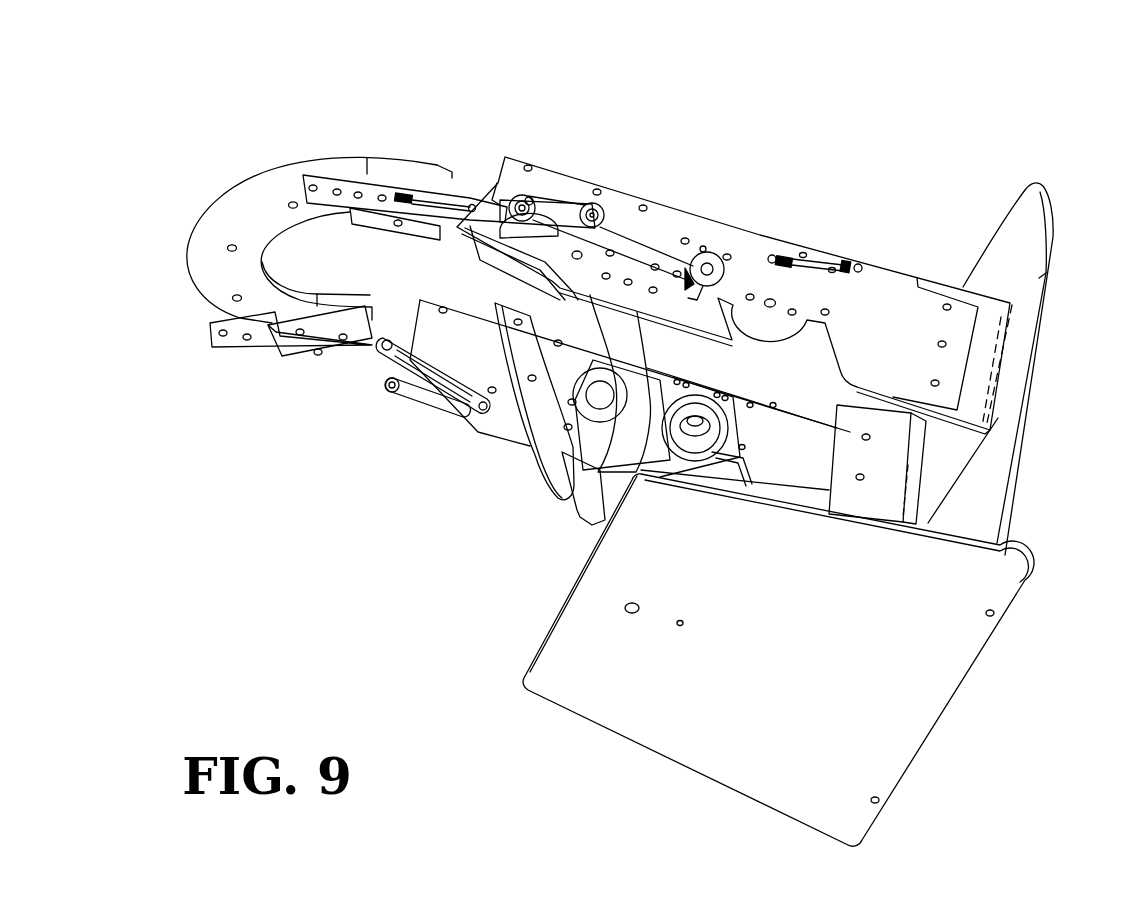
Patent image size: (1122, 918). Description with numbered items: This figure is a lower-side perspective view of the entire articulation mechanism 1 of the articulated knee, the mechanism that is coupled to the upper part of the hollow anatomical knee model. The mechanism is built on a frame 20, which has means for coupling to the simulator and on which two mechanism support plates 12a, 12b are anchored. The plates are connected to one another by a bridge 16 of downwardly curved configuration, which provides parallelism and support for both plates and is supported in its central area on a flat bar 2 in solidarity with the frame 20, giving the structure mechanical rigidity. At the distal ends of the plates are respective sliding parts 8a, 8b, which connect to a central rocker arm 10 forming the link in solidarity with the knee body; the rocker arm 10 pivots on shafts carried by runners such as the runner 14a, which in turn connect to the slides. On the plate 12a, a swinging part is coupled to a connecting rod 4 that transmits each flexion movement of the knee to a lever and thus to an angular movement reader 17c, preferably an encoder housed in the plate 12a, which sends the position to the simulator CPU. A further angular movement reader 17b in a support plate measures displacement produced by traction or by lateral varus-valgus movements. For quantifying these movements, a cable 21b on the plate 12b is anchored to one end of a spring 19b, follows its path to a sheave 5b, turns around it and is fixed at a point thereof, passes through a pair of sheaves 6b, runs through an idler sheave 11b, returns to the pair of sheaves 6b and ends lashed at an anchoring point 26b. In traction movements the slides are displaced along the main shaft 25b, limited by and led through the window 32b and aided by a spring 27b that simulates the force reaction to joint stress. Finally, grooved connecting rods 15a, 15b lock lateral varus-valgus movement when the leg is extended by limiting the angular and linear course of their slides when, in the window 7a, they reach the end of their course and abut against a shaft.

The articulation mechanism 1 is at (583, 746).
The flat bar 2 is at (573, 448).
The connecting rod 4 is at (393, 383).
The window 7a is at (413, 392).
The sliding part 8a is at (237, 350).
The sliding part 8b is at (481, 197).
The central rocker arm 10 is at (273, 165).
The idler sheave 11b is at (598, 202).
The mechanism support plate 12a is at (793, 408).
The mechanism support plate 12b is at (733, 223).
The runner 14a is at (313, 347).
The grooved connecting rod 15a is at (390, 362).
The grooved connecting rod 15b is at (500, 257).
The bridge 16 is at (555, 484).
The angular movement reader 17b is at (588, 376).
The angular movement reader 17c is at (545, 481).
The spring 19b is at (850, 263).
The frame 20 is at (1043, 190).
The cable 21b is at (668, 250).
The main shaft 25b is at (531, 198).
The anchoring point 26b is at (698, 252).
The spring 27b is at (440, 182).
The window 32b is at (507, 203).
The sheave 5b is at (722, 268).
The pair of sheaves 6b is at (527, 196).